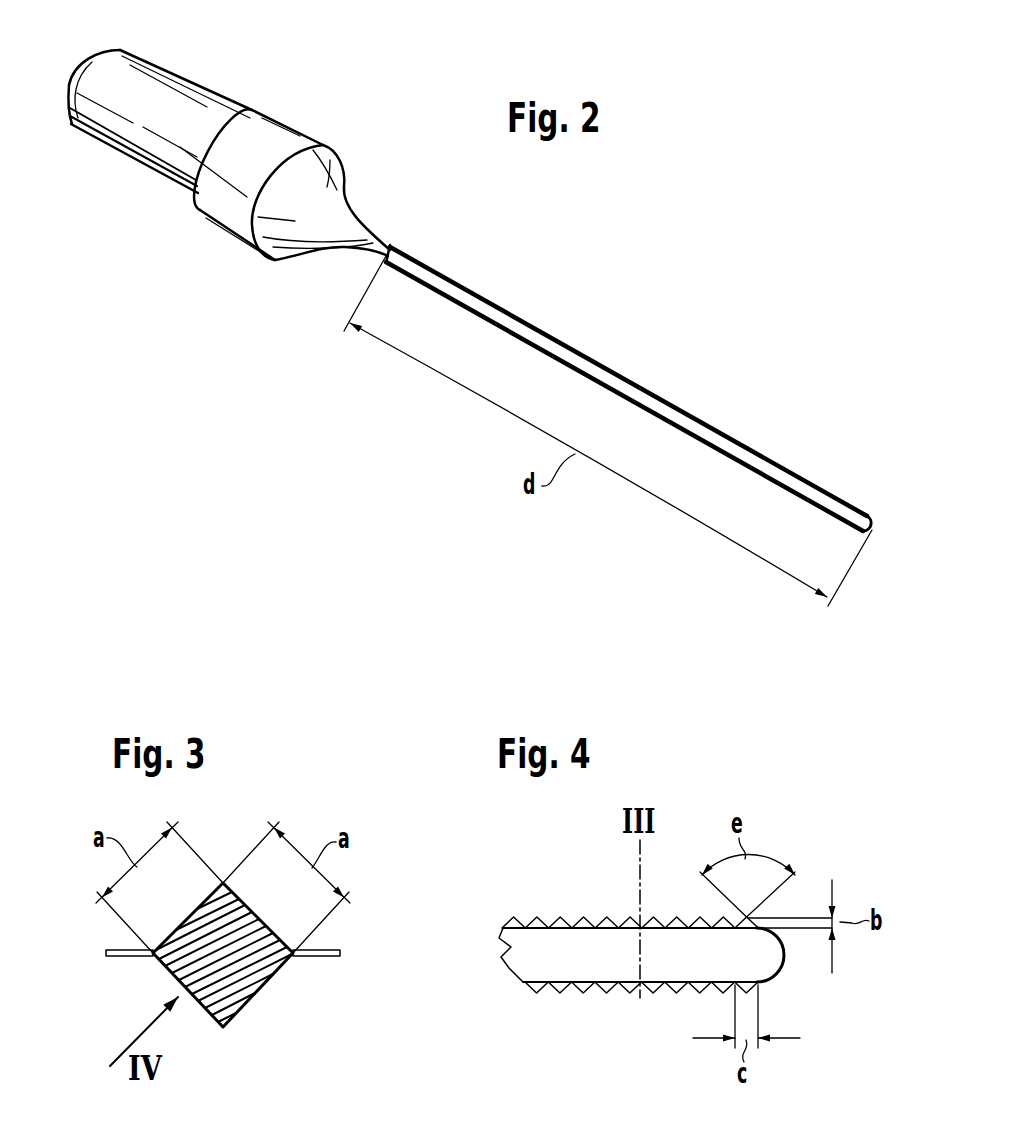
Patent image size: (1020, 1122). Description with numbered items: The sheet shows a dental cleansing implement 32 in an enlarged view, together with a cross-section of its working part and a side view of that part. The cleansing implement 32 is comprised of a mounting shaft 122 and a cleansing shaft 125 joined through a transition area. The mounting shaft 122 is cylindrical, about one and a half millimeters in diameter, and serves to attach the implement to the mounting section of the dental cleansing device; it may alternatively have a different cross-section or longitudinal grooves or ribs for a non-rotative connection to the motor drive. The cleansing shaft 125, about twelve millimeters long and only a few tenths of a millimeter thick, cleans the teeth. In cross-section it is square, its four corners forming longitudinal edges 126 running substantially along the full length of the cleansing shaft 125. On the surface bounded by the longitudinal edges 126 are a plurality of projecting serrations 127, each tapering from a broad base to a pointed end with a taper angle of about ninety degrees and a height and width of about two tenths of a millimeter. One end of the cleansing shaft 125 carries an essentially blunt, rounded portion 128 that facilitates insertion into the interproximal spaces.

In FIG. 2, the cleansing implement 32 is at (469, 282).
In FIG. 2, the mounting shaft 122 is at (178, 100).
In FIG. 2, the cleansing shaft 125 is at (717, 440).
In FIG. 3, the cleansing shaft 125 is at (265, 1005).
In FIG. 4, the cleansing shaft 125 is at (517, 970).
In FIG. 3, the longitudinal edges 126 is at (223, 882).
In FIG. 3, the serrations 127 is at (133, 957).
In FIG. 4, the serrations 127 is at (553, 923).
In FIG. 4, the rounded portion 128 is at (788, 963).